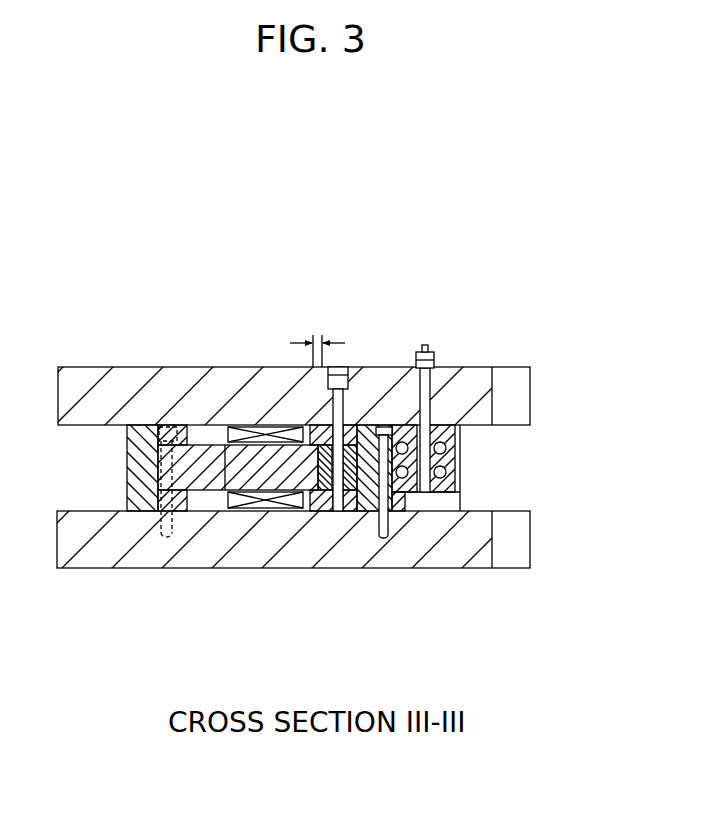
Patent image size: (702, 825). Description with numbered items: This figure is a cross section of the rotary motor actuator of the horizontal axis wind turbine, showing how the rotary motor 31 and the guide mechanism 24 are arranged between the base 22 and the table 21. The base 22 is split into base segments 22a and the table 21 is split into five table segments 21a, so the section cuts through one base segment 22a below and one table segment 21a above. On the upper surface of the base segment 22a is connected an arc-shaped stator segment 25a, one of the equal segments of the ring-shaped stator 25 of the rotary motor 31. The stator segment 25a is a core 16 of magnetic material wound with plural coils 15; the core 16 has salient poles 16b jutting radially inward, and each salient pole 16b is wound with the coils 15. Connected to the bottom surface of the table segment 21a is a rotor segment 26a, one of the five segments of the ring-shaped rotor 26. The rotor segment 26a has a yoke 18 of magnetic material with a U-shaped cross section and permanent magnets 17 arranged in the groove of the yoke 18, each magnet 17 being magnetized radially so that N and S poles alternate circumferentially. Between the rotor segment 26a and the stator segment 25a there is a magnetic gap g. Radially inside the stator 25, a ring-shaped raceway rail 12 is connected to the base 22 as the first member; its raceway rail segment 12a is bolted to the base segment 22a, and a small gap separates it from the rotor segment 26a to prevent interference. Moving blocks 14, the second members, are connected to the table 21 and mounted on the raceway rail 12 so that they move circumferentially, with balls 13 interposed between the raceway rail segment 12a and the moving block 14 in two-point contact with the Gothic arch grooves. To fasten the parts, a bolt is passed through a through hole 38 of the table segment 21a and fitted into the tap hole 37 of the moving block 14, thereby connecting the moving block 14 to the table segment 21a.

The rotary motor 31 is at (351, 412).
The ring-shaped stator 25 is at (351, 412).
The stator segment 25a is at (351, 412).
The ring-shaped rotor 26 is at (351, 412).
The rotor segment 26a is at (351, 412).
The coil 15 is at (240, 422).
The core 16 is at (351, 412).
The salient pole 16b is at (303, 472).
The permanent magnet 17 is at (350, 462).
The yoke 18 is at (366, 458).
The table 21 is at (131, 385).
The table segment 21a is at (351, 412).
The base 22 is at (190, 553).
The base segment 22a is at (351, 412).
The raceway rail 12 is at (396, 498).
The raceway rail segment 12a is at (351, 412).
The ball 13 is at (405, 488).
The moving block 14 is at (445, 483).
The guide mechanism 24 is at (351, 412).
The tap hole 37 is at (472, 384).
The through hole 38 is at (428, 392).
The magnetic gap g is at (317, 336).